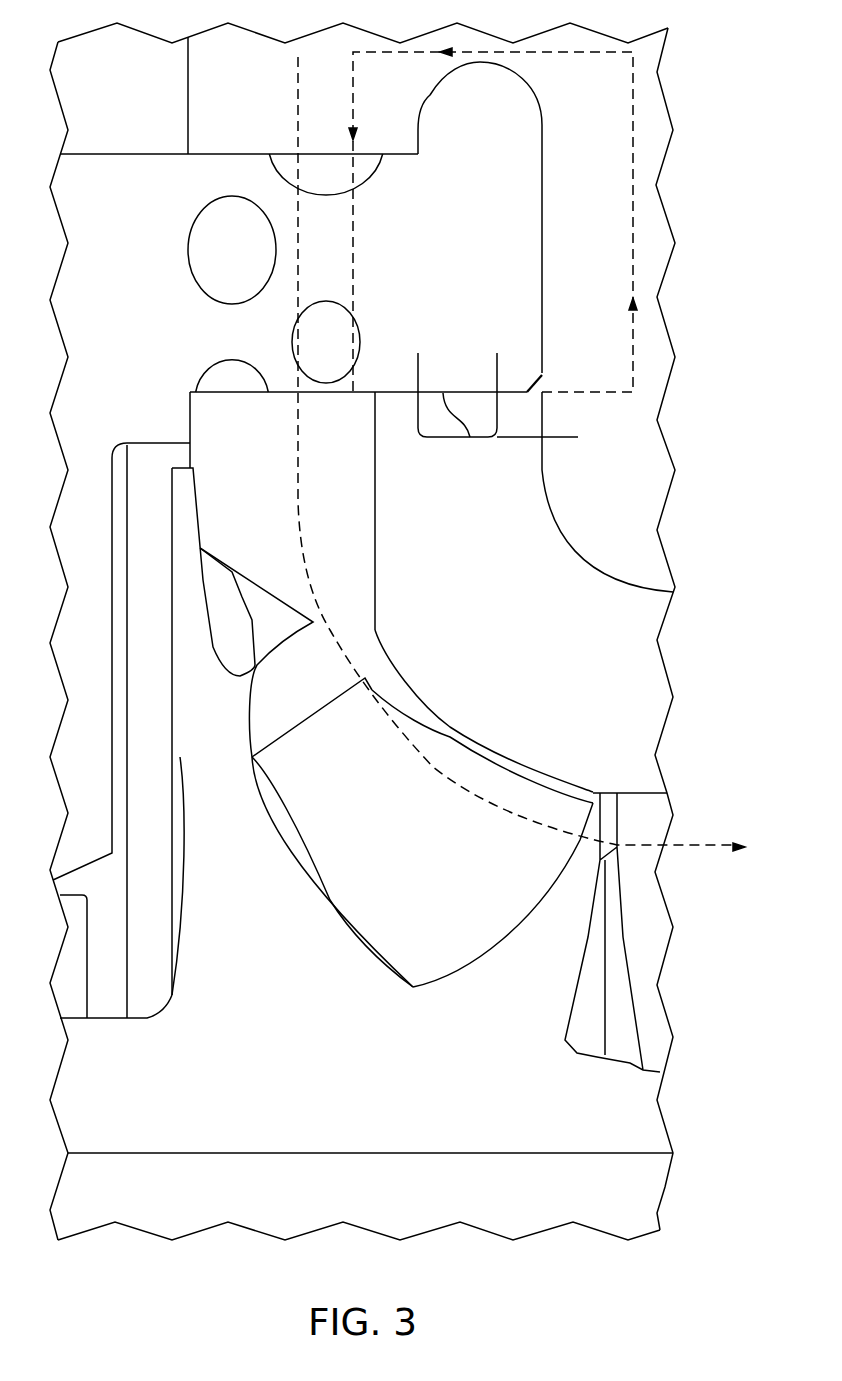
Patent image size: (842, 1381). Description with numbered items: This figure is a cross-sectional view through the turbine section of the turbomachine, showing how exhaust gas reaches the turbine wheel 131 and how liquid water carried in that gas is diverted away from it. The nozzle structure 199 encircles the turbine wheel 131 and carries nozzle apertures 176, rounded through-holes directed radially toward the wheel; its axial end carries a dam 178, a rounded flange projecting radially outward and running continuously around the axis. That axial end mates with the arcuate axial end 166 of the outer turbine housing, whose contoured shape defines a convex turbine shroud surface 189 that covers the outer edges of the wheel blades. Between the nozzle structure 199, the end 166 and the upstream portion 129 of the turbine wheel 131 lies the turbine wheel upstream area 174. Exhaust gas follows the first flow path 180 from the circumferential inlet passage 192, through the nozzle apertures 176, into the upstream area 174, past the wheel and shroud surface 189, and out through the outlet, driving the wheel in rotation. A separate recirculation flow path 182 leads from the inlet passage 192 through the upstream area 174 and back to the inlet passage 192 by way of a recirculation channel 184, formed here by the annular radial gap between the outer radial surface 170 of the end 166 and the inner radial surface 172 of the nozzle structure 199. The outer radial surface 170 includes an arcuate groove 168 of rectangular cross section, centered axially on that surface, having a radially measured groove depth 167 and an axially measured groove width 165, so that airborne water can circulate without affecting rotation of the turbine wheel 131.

The upstream portion 129 is at (244, 580).
The turbine wheel 131 is at (503, 1147).
The groove width 165 is at (530, 353).
The arcuate axial end 166 is at (530, 507).
The groove depth 167 is at (572, 363).
The arcuate groove 168 is at (435, 427).
The outer radial surface 170 is at (517, 392).
The inner radial surface 172 is at (470, 437).
The turbine wheel upstream area 174 is at (237, 437).
The nozzle apertures 176 is at (232, 208).
The dam 178 is at (448, 100).
The first flow path 180 is at (700, 847).
The recirculation flow path 182 is at (635, 258).
The recirculation channel 184 is at (378, 390).
The turbine shroud surface 189 is at (410, 693).
The circumferential inlet passage 192 is at (647, 117).
The nozzle structure 199 is at (520, 236).